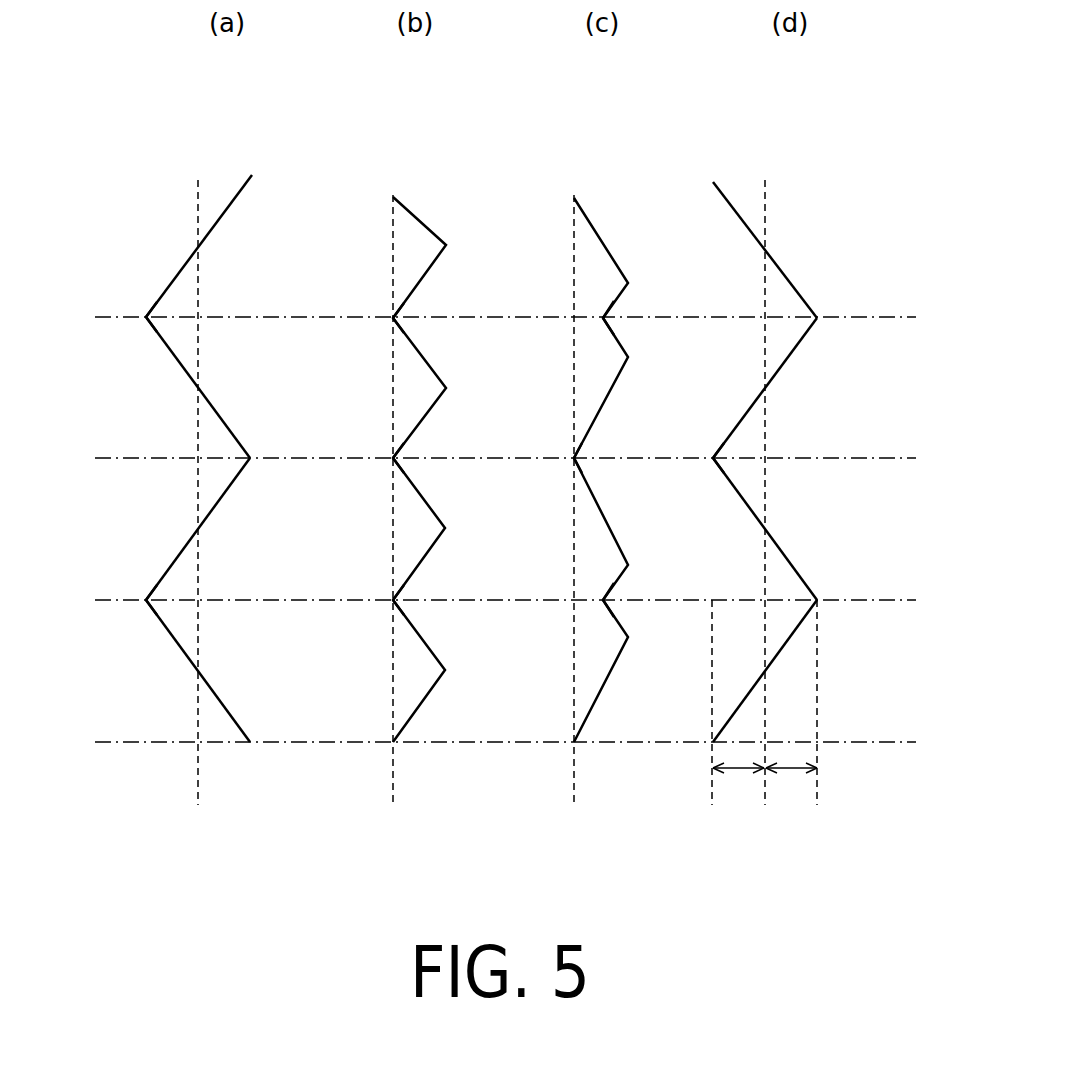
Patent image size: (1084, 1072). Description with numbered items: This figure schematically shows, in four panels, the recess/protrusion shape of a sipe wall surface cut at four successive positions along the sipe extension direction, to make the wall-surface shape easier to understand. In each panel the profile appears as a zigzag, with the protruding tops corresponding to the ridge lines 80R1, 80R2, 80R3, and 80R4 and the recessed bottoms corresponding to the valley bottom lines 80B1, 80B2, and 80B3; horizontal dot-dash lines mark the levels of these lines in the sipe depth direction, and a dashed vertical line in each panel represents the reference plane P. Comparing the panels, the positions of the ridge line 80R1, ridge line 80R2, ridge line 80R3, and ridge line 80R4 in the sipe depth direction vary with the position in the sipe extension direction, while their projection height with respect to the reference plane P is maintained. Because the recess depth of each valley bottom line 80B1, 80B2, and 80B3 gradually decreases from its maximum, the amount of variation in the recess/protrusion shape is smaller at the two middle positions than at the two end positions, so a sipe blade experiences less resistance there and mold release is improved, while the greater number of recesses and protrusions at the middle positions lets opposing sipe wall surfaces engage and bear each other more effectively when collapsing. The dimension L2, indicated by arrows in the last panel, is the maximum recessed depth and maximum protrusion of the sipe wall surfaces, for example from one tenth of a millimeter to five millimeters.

The ridge line 80R1 is at (251, 176).
The ridge line 80R2 is at (251, 458).
The ridge line 80R3 is at (445, 528).
The ridge line 80R4 is at (250, 742).
The valley bottom line 80B1 is at (146, 317).
The valley bottom line 80B2 is at (393, 458).
The valley bottom line 80B3 is at (146, 600).
The dimension L2 is at (764, 710).
The reference plane P is at (197, 800).